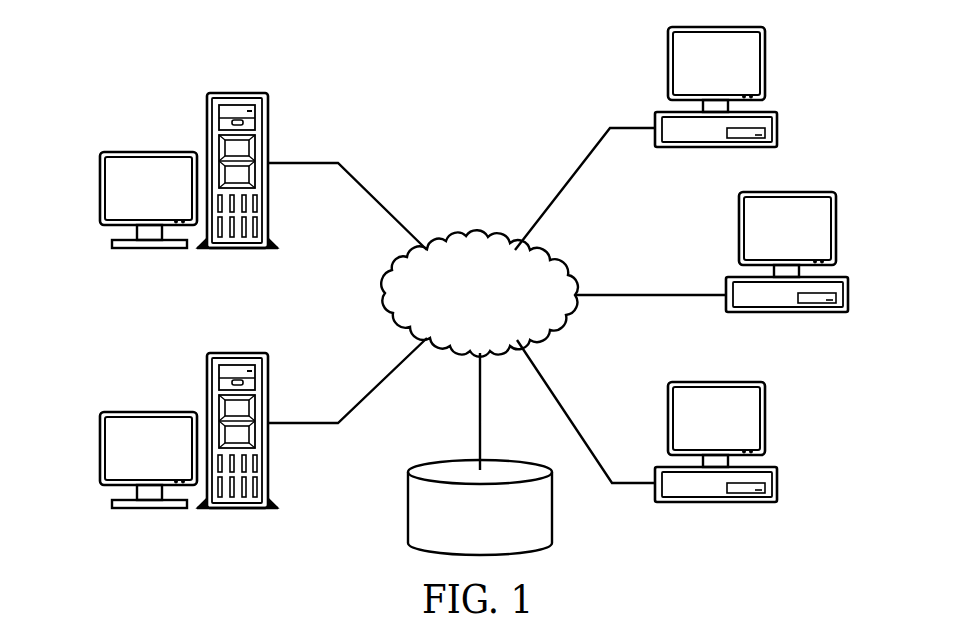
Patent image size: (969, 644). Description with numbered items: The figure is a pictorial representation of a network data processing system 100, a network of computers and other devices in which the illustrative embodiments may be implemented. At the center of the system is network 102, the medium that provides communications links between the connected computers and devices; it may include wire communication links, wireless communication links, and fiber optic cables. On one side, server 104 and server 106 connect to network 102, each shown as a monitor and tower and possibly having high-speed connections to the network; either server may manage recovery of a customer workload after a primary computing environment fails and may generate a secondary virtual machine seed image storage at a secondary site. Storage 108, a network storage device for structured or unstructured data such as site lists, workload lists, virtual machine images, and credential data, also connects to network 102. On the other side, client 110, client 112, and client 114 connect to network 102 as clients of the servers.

The network data processing system 100 is at (347, 77).
The network 102 is at (452, 240).
The server 104 is at (100, 190).
The server 106 is at (100, 447).
The storage 108 is at (408, 507).
The client 110 is at (778, 118).
The client 112 is at (848, 303).
The client 114 is at (778, 493).